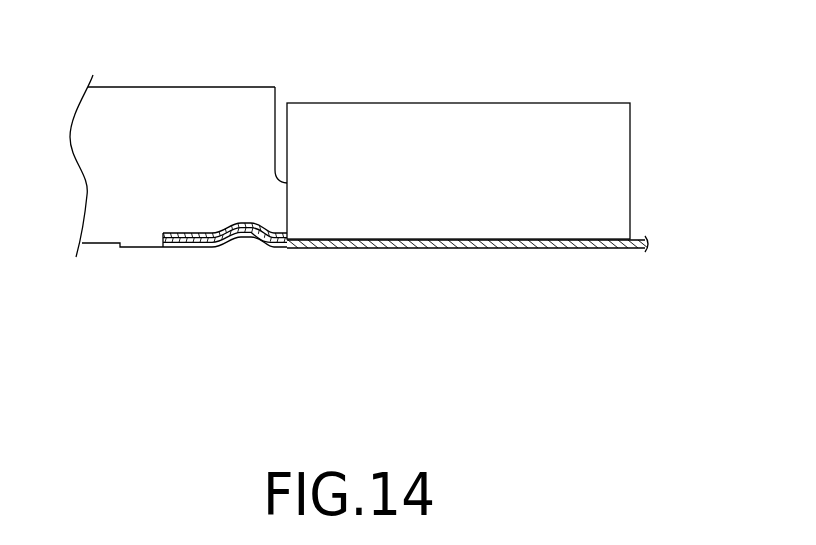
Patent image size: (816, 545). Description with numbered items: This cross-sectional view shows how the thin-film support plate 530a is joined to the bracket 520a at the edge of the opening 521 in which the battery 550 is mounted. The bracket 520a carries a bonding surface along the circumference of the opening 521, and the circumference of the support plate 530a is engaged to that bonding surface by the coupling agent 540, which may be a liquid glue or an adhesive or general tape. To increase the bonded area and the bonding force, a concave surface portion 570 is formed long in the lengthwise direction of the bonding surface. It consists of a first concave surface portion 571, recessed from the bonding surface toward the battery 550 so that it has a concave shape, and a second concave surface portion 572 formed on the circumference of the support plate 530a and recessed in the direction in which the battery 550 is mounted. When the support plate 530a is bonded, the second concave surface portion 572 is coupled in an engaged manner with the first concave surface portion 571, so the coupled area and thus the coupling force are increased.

The bracket 520a is at (177, 103).
The opening 521 is at (281, 112).
The coupling agent 540 is at (168, 232).
The battery 550 is at (612, 172).
The support plate 530a is at (525, 249).
The concave surface portion 570 is at (223, 300).
The first concave surface portion 571 is at (238, 223).
The second concave surface portion 572 is at (240, 237).